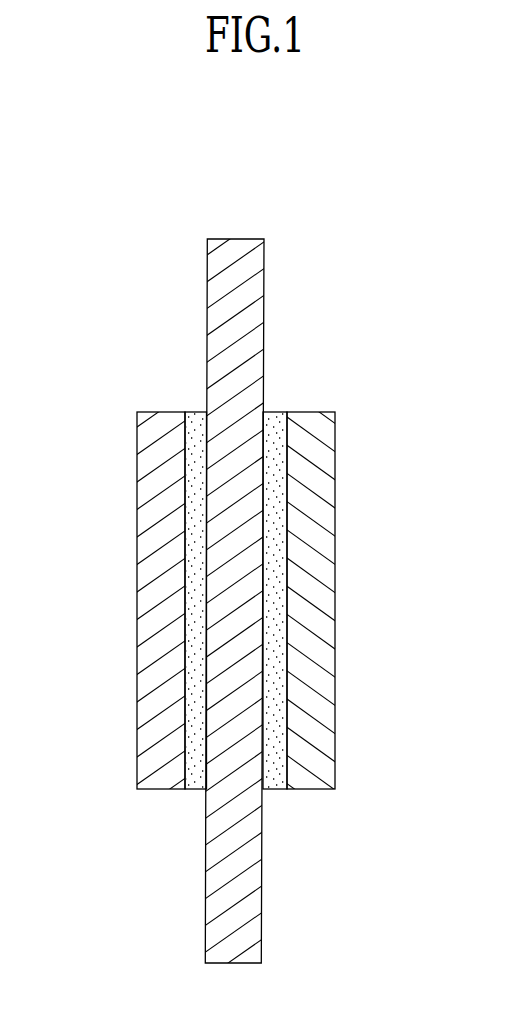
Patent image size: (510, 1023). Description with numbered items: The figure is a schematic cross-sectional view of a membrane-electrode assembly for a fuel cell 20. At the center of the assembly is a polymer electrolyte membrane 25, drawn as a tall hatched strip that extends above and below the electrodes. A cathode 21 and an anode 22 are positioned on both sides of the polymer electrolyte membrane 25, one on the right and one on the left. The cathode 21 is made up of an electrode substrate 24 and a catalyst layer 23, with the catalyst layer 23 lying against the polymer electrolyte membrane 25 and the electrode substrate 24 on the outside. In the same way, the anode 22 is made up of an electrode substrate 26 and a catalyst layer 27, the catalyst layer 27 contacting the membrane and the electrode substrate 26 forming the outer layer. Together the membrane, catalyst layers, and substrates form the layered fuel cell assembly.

The membrane-electrode assembly for a fuel cell 20 is at (227, 162).
The cathode 21 is at (344, 609).
The anode 22 is at (123, 596).
The catalyst layer 23 is at (277, 765).
The electrode substrate 24 is at (330, 592).
The polymer electrolyte membrane 25 is at (252, 596).
The electrode substrate 26 is at (145, 590).
The catalyst layer 27 is at (193, 760).